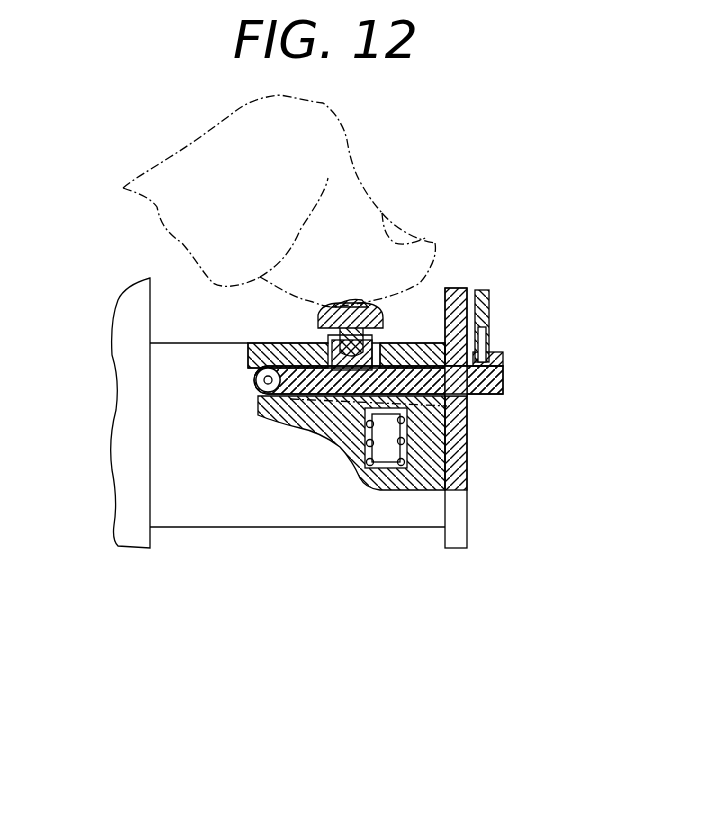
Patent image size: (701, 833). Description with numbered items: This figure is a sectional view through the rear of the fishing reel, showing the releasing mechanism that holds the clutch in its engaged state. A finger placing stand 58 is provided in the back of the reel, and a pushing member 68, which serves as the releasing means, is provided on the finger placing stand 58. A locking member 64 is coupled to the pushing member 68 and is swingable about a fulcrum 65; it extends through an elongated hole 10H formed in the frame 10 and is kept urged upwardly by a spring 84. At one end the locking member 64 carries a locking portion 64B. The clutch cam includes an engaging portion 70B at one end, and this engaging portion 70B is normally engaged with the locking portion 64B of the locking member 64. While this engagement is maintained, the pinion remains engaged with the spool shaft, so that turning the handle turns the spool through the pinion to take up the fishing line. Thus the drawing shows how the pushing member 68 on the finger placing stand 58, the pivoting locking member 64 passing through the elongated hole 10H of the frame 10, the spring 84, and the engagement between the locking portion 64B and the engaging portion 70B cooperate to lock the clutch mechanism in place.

The frame 10 is at (458, 527).
The elongated hole 10H is at (467, 404).
The finger placing stand 58 is at (212, 503).
The locking member 64 is at (478, 397).
The locking portion 64B is at (505, 357).
The fulcrum 65 is at (262, 378).
The pushing member 68 is at (372, 306).
The engaging portion 70B is at (483, 338).
The spring 84 is at (372, 470).